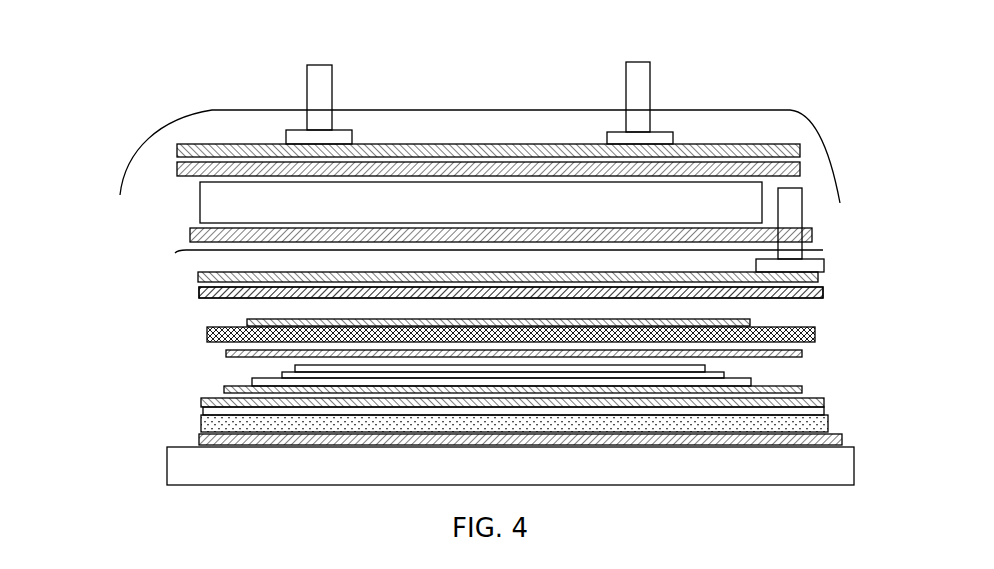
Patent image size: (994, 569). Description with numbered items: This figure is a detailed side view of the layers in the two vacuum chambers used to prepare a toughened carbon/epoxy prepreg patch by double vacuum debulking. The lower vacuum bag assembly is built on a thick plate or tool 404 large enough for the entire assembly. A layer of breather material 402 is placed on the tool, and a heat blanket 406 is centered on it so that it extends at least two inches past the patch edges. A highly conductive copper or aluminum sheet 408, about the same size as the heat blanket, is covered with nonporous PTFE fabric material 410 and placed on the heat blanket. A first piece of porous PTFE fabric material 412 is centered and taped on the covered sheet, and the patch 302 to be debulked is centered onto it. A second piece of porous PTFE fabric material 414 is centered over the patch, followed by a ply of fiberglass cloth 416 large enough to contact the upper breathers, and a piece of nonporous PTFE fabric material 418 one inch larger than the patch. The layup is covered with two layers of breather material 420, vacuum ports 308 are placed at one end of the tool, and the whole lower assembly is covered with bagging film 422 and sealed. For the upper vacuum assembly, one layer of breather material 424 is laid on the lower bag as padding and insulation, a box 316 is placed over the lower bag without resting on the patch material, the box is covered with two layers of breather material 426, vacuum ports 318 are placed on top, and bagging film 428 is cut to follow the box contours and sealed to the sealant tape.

The patch 302 is at (255, 372).
The vacuum ports 308 is at (788, 188).
The box 316 is at (200, 210).
The vacuum ports 318 is at (324, 64).
The breather material 402 is at (200, 441).
The tool 404 is at (857, 465).
The heat blanket 406 is at (203, 423).
The aluminum sheet 408 is at (203, 412).
The nonporous PTFE fabric material 410 is at (202, 400).
The porous PTFE fabric material 412 is at (225, 388).
The porous PTFE fabric material 414 is at (226, 358).
The fiberglass cloth 416 is at (208, 331).
The nonporous PTFE fabric material 418 is at (247, 321).
The breather material 420 is at (823, 293).
The bagging film 422 is at (848, 261).
The breather material 424 is at (188, 232).
The breather material 426 is at (164, 163).
The bagging film 428 is at (197, 110).